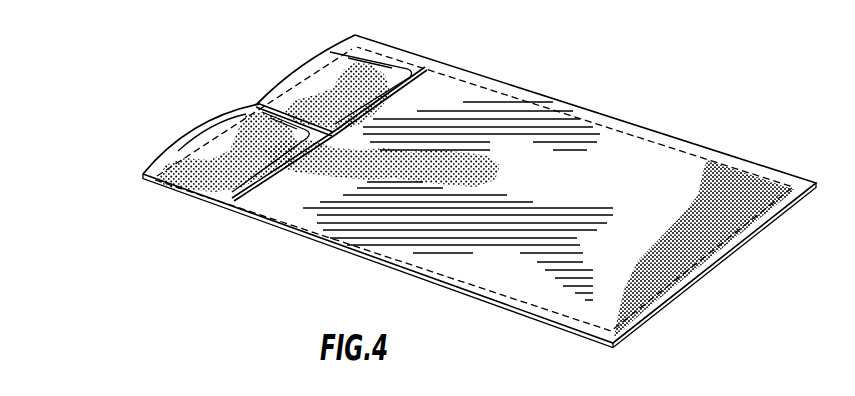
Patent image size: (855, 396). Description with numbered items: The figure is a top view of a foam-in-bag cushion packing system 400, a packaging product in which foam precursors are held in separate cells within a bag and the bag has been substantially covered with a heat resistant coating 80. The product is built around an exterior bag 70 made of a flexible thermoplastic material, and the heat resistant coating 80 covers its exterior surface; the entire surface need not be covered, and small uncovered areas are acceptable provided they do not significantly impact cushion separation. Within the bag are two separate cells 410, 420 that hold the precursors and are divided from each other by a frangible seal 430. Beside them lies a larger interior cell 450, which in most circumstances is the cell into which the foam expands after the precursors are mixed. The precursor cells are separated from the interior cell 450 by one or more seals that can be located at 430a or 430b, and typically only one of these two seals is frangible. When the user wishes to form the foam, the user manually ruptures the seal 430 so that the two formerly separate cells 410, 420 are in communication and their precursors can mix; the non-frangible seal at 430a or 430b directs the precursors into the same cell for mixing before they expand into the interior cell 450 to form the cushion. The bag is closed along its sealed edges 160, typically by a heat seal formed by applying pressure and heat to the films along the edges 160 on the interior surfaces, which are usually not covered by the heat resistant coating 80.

The foam-in-bag cushion packing system 400 is at (124, 190).
The exterior bag 70 is at (573, 333).
The sealed edges 160 is at (627, 133).
The interior cell 450 is at (537, 180).
The heat resistant coating 80 is at (740, 188).
The separate cell 410 is at (313, 75).
The separate cell 420 is at (222, 137).
The frangible seal 430 is at (278, 102).
The seal 430a is at (268, 175).
The seal 430b is at (405, 93).